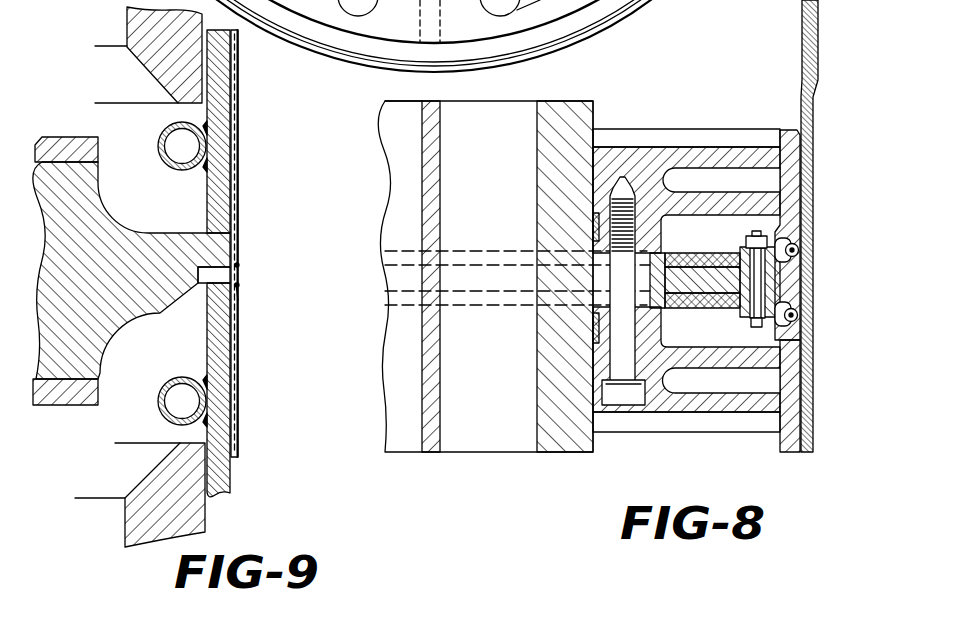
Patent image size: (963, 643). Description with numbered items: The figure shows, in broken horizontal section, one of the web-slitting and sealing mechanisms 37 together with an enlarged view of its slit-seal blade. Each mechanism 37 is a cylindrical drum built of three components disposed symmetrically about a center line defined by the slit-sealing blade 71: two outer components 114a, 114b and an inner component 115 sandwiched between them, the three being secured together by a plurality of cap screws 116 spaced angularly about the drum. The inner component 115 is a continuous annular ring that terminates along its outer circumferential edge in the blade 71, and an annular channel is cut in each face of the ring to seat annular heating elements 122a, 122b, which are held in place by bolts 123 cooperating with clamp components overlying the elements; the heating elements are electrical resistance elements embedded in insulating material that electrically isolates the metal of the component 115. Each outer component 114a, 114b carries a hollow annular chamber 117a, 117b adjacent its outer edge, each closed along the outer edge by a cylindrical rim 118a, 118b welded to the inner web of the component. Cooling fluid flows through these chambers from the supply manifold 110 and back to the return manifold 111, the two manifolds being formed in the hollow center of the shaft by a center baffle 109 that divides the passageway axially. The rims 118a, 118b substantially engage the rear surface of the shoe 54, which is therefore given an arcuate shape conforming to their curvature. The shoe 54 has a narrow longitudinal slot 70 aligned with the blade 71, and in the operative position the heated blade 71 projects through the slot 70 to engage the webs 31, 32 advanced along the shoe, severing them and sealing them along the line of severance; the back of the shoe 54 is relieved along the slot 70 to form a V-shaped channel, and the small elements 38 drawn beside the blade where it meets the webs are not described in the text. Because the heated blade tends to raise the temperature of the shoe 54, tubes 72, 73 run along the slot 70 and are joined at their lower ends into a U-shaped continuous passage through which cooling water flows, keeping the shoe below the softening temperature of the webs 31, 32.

In FIG. 9, the web 31 is at (242, 62).
In FIG. 9, the web 32 is at (242, 95).
In FIG. 9, the web-slitting and sealing mechanism 37 is at (82, 408).
In FIG. 8, the web-slitting and sealing mechanism 37 is at (583, 100).
In FIG. 9, the rivets 38 is at (240, 262).
In FIG. 8, the rivets 38 is at (807, 272).
In FIG. 9, the shoe 54 is at (225, 195).
In FIG. 8, the shoe 54 is at (810, 117).
In FIG. 9, the slot 70 is at (213, 258).
In FIG. 9, the slit-sealing blade 71 is at (238, 300).
In FIG. 8, the slit-sealing blade 71 is at (810, 287).
In FIG. 9, the tube 72 is at (160, 138).
In FIG. 9, the tube 73 is at (185, 378).
In FIG. 8, the center baffle 109 is at (440, 112).
In FIG. 8, the supply manifold 110 is at (515, 110).
In FIG. 8, the return manifold 111 is at (398, 104).
In FIG. 8, the outer component 114a is at (683, 400).
In FIG. 8, the outer component 114b is at (672, 158).
In FIG. 8, the inner component 115 is at (685, 262).
In FIG. 8, the cap screw 116 is at (622, 402).
In FIG. 8, the annular chamber 117a is at (730, 385).
In FIG. 8, the annular chamber 117b is at (730, 175).
In FIG. 8, the rim 118a is at (797, 418).
In FIG. 8, the rim 118b is at (803, 172).
In FIG. 8, the heating element 122a is at (687, 306).
In FIG. 8, the heating element 122b is at (718, 258).
In FIG. 8, the bolt 123 is at (760, 325).